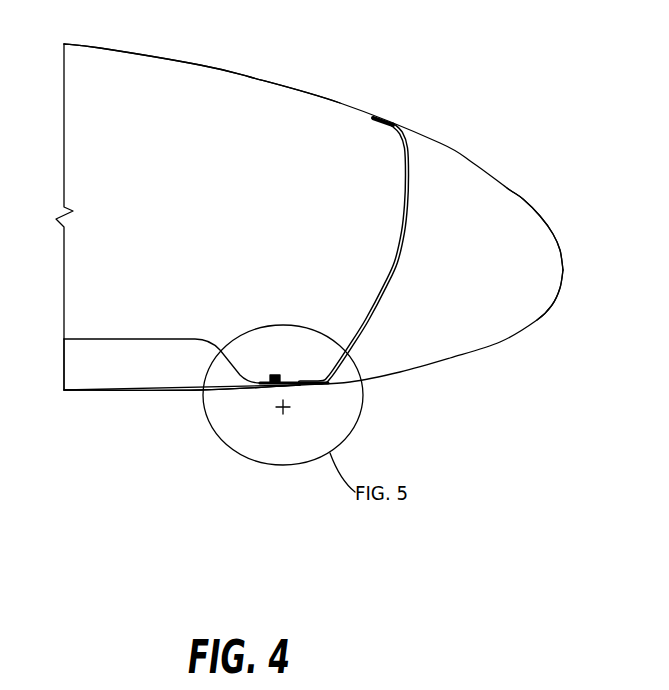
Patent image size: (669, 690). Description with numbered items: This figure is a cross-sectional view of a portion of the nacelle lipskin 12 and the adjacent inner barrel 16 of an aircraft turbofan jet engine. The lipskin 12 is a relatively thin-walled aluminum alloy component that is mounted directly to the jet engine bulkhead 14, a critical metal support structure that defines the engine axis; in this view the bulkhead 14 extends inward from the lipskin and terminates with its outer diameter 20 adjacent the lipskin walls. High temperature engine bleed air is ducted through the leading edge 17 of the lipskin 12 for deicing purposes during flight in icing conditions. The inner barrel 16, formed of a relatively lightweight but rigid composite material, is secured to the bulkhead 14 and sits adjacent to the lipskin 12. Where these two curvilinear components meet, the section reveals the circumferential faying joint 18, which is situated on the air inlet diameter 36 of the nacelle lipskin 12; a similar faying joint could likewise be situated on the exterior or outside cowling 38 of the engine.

The nacelle lipskin 12 is at (522, 182).
The bulkhead 14 is at (397, 262).
The inner barrel 16 is at (162, 373).
The leading edge 17 is at (563, 273).
The circumferential faying joint 18 is at (279, 408).
The outer diameter 20 is at (386, 118).
The air inlet diameter 36 is at (122, 395).
The outside cowling 38 is at (253, 78).